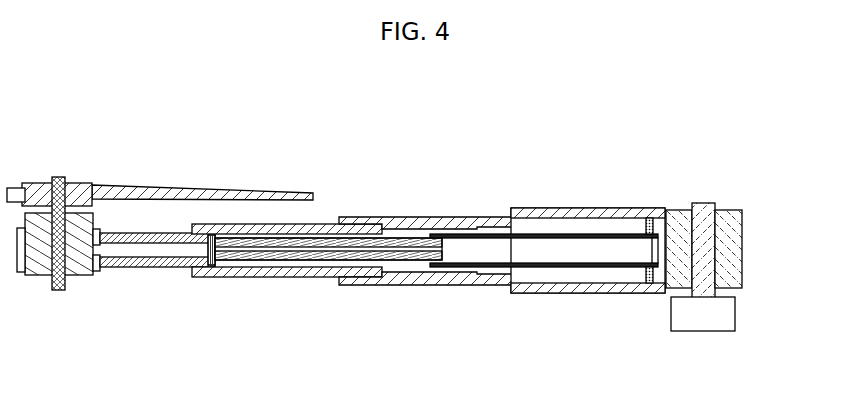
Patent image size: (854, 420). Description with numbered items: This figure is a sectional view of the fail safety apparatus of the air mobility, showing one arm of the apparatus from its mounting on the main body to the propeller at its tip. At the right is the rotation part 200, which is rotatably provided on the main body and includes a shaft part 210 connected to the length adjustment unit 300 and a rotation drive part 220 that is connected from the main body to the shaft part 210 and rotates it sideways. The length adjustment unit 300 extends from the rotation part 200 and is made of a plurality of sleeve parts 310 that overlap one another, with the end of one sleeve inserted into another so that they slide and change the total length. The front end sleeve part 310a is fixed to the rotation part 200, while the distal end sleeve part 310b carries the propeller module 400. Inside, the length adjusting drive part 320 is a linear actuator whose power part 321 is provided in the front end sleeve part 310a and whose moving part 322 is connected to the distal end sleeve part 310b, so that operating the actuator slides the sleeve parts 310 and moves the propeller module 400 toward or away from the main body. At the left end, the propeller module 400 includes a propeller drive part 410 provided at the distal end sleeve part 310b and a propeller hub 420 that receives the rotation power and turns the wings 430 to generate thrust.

The rotation part 200 is at (727, 195).
The shaft part 210 is at (730, 247).
The rotation drive part 220 is at (707, 318).
The length adjustment unit 300 is at (375, 208).
The sleeve parts 310 is at (308, 278).
The front end sleeve part 310a is at (568, 291).
The distal end sleeve part 310b is at (138, 268).
The length adjusting drive part 320 is at (568, 142).
The power part 321 is at (423, 238).
The moving part 322 is at (552, 234).
The propeller module 400 is at (80, 172).
The propeller drive part 410 is at (40, 276).
The propeller hub 420 is at (33, 183).
The wings 430 is at (198, 185).